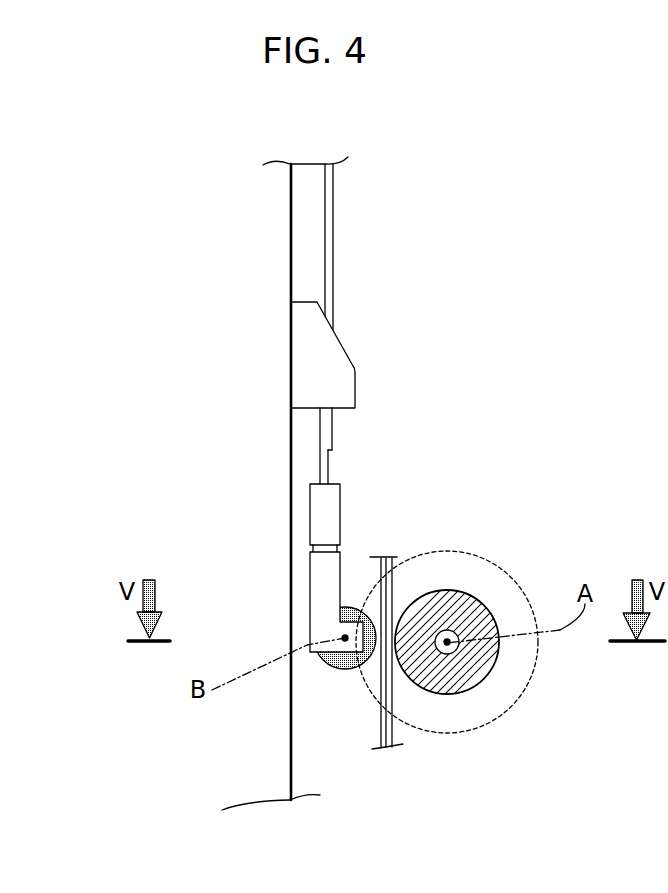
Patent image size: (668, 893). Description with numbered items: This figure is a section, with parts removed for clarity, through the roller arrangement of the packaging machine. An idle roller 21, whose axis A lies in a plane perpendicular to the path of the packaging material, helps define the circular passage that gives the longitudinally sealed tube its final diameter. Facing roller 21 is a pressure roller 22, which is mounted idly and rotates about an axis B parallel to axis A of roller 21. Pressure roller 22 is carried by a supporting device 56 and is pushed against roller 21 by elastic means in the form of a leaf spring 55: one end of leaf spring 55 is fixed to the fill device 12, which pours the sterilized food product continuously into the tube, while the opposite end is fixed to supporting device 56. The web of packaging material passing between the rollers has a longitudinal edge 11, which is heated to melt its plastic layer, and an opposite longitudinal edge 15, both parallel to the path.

The fill device 12 is at (290, 192).
The leaf spring 55 is at (330, 243).
The longitudinal edge 15 is at (378, 570).
The longitudinal edge 11 is at (380, 590).
The supporting device 56 is at (320, 620).
The pressure roller 22 is at (341, 672).
The roller 21 is at (513, 667).